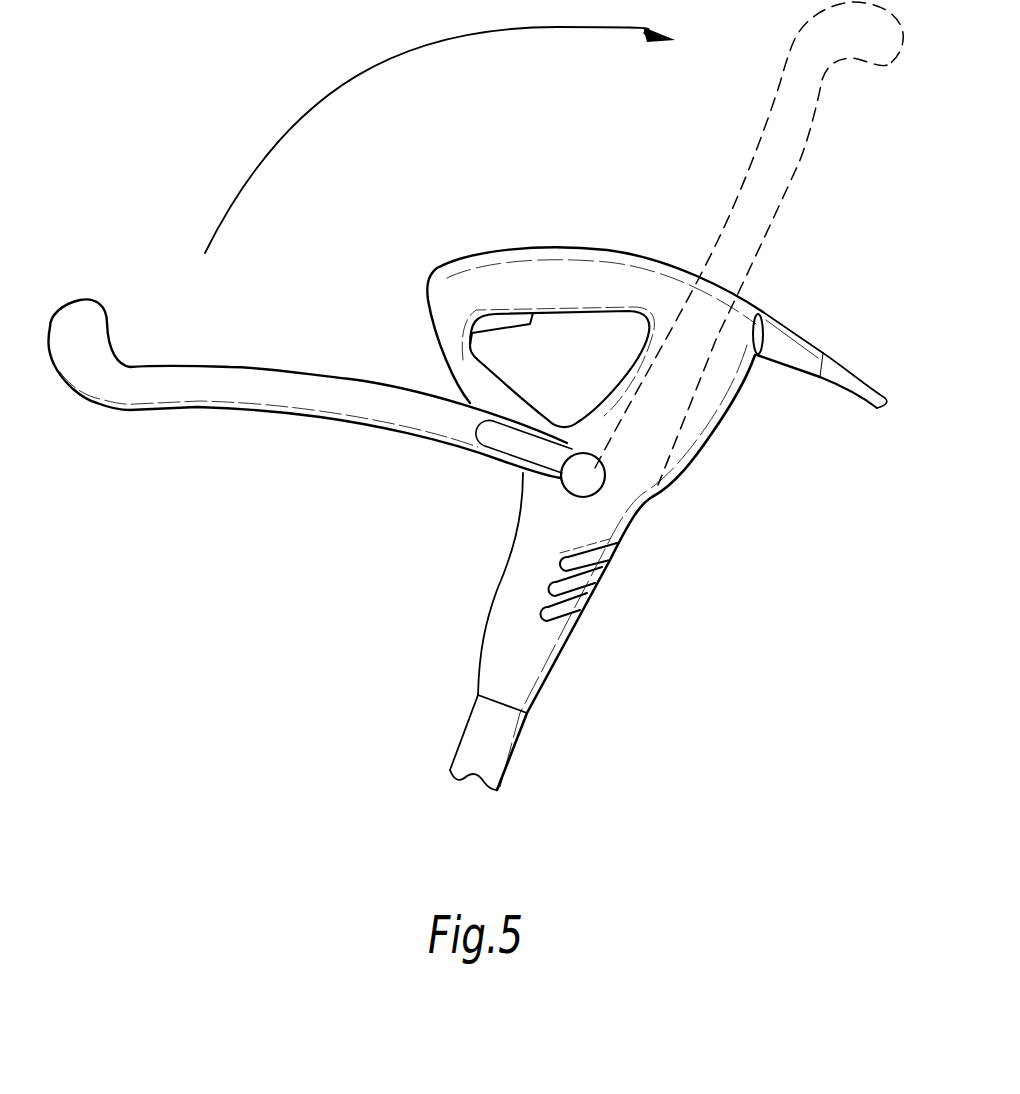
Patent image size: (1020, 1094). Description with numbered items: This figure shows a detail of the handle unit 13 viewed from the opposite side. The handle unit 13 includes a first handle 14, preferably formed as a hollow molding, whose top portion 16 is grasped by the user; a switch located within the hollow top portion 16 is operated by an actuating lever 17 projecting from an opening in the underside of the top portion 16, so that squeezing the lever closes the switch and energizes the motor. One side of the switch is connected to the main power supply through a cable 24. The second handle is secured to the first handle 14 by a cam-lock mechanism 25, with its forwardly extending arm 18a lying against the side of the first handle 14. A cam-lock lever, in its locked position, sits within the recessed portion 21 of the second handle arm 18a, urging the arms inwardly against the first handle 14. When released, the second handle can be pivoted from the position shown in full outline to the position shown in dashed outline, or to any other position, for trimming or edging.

The handle unit 13 is at (428, 615).
The first handle 14 is at (700, 407).
The top portion 16 is at (578, 268).
The actuating lever 17 is at (513, 326).
The second handle arm 18a is at (235, 388).
The recessed portion 21 is at (503, 440).
The cable 24 is at (795, 345).
The cam-lock mechanism 25 is at (583, 477).